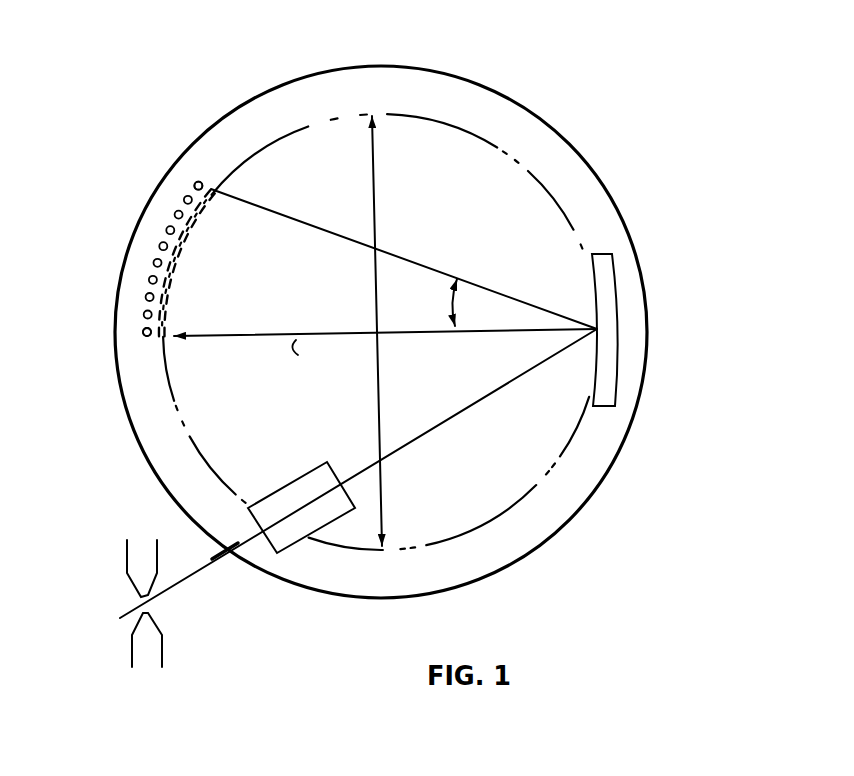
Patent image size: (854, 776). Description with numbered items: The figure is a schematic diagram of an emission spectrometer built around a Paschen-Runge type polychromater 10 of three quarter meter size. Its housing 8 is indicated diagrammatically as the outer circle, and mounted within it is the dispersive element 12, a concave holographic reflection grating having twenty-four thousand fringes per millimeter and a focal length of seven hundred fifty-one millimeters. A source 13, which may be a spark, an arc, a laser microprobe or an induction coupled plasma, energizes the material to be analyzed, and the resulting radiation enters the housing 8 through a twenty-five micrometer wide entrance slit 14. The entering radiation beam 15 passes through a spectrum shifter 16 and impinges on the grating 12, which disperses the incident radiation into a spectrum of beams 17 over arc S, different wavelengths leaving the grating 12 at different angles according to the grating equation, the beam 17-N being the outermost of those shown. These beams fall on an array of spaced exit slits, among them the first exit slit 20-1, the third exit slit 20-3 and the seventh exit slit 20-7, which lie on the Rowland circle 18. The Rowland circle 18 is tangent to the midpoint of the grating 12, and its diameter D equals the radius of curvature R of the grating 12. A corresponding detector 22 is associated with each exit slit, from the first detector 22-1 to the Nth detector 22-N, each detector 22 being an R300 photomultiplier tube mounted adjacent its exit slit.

The housing 8 is at (488, 90).
The polychromater 10 is at (592, 523).
The dispersive element 12 is at (610, 290).
The source 13 is at (121, 633).
The entrance slit 14 is at (218, 562).
The radiation beam 15 is at (180, 585).
The spectrum shifter 16 is at (318, 466).
The spectrum of beams 17 is at (410, 330).
The Nth dispersed beam 17-N is at (315, 222).
The Rowland circle 18 is at (467, 137).
The first exit slit 20-1 is at (168, 328).
The third exit slit 20-3 is at (170, 298).
The seventh exit slit 20-7 is at (190, 237).
The detector 22 is at (176, 211).
The first detector 22-1 is at (143, 332).
The Nth detector 22-N is at (196, 182).